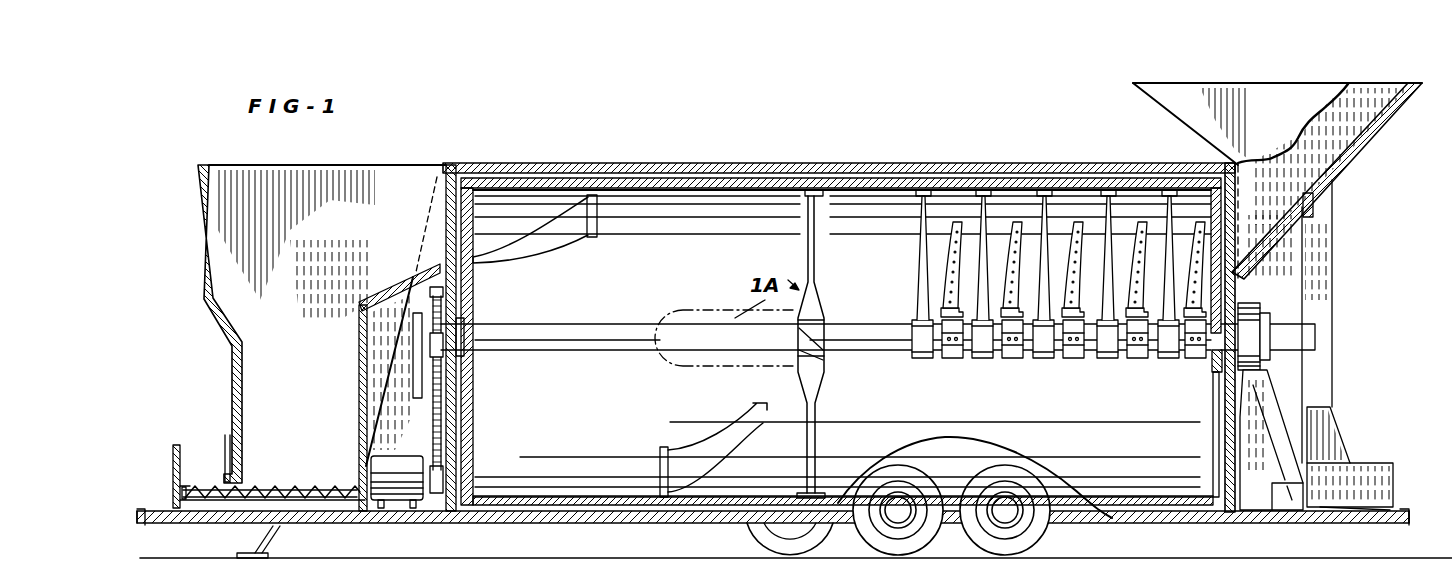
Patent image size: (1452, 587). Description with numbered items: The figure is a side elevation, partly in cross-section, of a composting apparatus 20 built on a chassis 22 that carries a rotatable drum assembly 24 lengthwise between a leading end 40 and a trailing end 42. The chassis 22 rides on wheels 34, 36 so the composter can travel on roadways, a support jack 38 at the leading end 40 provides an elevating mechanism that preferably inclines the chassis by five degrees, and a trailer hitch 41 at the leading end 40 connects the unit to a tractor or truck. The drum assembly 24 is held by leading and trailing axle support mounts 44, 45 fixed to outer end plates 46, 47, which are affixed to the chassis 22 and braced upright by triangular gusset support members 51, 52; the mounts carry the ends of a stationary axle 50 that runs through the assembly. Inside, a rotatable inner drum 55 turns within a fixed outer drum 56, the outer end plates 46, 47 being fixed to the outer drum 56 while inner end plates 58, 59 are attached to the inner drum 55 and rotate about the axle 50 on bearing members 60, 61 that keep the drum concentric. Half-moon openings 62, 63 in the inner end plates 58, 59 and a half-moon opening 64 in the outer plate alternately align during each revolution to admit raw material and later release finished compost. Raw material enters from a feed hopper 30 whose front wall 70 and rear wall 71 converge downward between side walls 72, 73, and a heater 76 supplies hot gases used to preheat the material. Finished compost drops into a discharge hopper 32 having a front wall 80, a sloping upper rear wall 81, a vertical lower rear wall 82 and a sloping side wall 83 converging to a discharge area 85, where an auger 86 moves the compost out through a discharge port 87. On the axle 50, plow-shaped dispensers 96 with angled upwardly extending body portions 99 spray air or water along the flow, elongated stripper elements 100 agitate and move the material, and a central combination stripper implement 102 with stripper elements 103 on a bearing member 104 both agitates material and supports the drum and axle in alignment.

The composting apparatus 20 is at (648, 136).
The chassis 22 is at (540, 514).
The rotatable drum assembly 24 is at (443, 170).
The feed hopper 30 is at (1213, 92).
The discharge hopper 32 is at (362, 190).
The wheels 34 is at (800, 548).
The wheels 36 is at (975, 548).
The support jack 38 is at (273, 532).
The leading end 40 is at (195, 522).
The trailer hitch 41 is at (145, 512).
The trailing end 42 is at (1392, 524).
The leading axle support mount 44 is at (418, 392).
The trailing axle support mount 45 is at (1250, 390).
The outer end plate 46 is at (475, 455).
The outer end plate 47 is at (1228, 400).
The stationary axle 50 is at (628, 322).
The gusset support member 51 is at (1273, 417).
The gusset support member 52 is at (415, 445).
The inner drum 55 is at (848, 190).
The outer drum 56 is at (737, 163).
The inner end plate 58 is at (470, 420).
The inner end plate 59 is at (1213, 485).
The bearing member 60 is at (478, 362).
The bearing member 61 is at (1214, 365).
The half-moon opening 62 is at (470, 240).
The half-moon opening 63 is at (1218, 440).
The half-moon opening 64 is at (447, 210).
The front wall 70 is at (1143, 97).
The rear wall 71 is at (1385, 128).
The side wall 72 is at (1372, 105).
The side wall 73 is at (1320, 100).
The heater 76 is at (1330, 402).
The front wall 80 is at (210, 270).
The sloping upper rear wall 81 is at (390, 292).
The lower rear wall 82 is at (358, 418).
The sloping side wall 83 is at (333, 236).
The discharge area 85 is at (325, 480).
The auger 86 is at (283, 490).
The discharge port 87 is at (200, 478).
The dispensers 96 is at (1020, 235).
The upwardly extending body portion 99 is at (1003, 320).
The stripper element 100 is at (912, 322).
The combination stripper implement 102 is at (792, 280).
The stripper elements 103 is at (812, 245).
The bearing member 104 is at (825, 330).